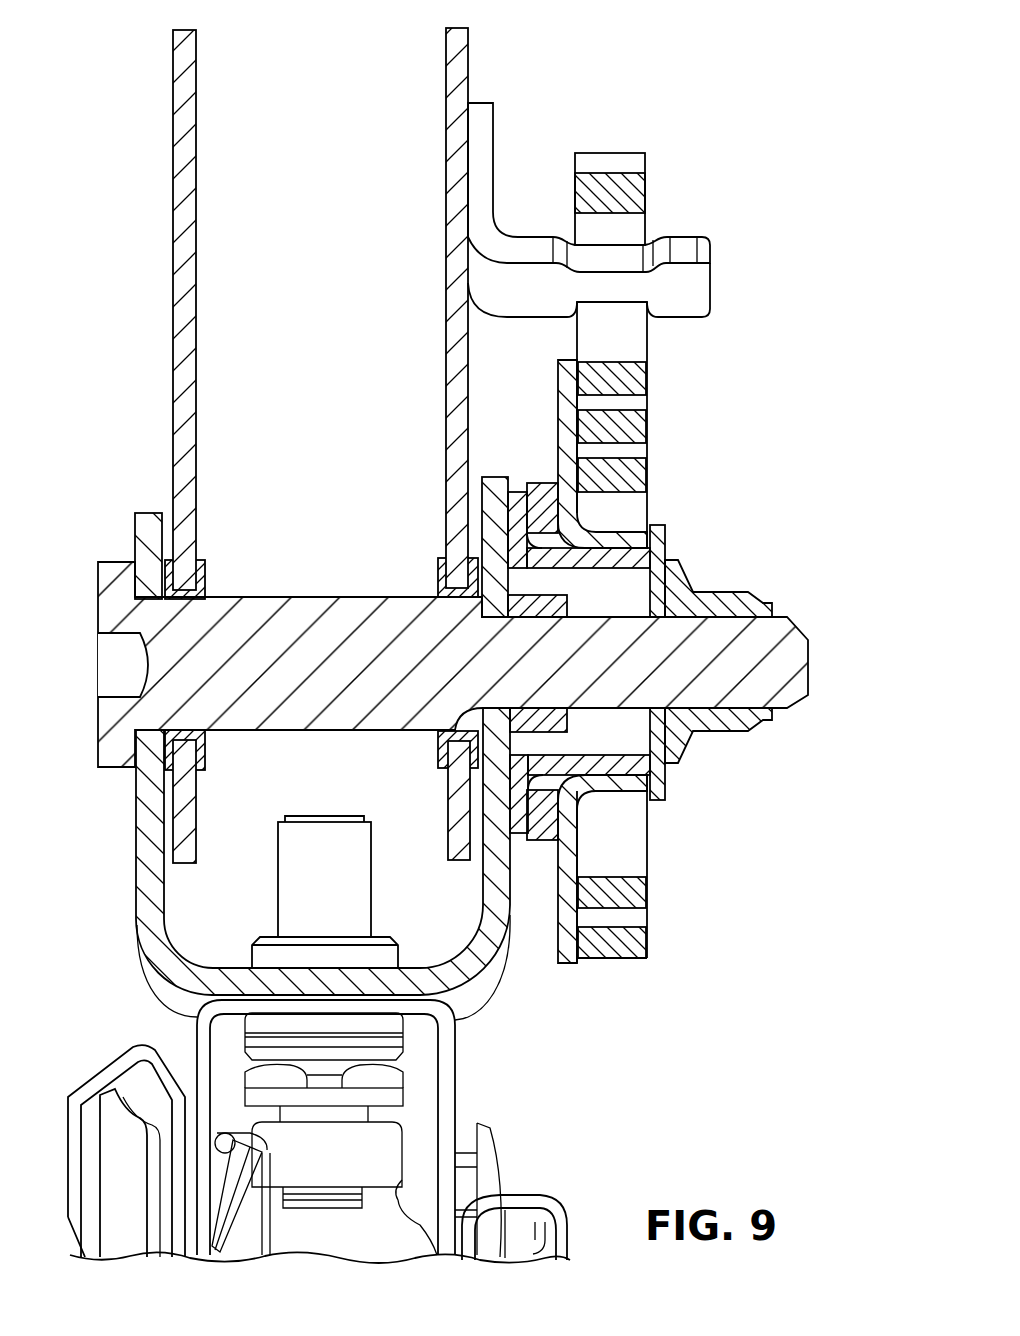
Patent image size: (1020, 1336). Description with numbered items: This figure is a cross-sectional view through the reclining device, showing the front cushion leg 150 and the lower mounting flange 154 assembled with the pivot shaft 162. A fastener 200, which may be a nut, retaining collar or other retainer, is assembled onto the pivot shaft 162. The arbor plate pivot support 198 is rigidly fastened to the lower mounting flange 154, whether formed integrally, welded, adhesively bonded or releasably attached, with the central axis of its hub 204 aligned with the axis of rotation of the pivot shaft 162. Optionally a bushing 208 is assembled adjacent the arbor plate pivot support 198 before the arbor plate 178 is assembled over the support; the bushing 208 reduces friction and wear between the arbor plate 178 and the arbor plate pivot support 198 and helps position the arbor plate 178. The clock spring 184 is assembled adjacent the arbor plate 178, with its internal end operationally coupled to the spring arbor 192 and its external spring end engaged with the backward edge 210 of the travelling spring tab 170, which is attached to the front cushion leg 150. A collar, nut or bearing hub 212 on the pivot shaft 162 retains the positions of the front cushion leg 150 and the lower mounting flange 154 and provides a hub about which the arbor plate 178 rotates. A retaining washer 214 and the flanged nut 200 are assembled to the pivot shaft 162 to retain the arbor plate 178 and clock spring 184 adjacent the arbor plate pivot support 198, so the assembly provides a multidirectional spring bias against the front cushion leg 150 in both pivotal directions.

The front cushion leg 150 is at (457, 68).
The lower mounting flange 154 is at (150, 855).
The pivot shaft 162 is at (788, 657).
The travelling spring tab 170 is at (698, 288).
The arbor plate 178 is at (560, 385).
The clock spring 184 is at (605, 185).
The spring arbor 192 is at (636, 822).
The arbor plate pivot support 198 is at (522, 495).
The fastener 200 is at (748, 603).
The hub 204 is at (683, 566).
The bushing 208 is at (527, 515).
The backward edge 210 is at (592, 308).
The bearing hub 212 is at (517, 590).
The retaining washer 214 is at (660, 535).